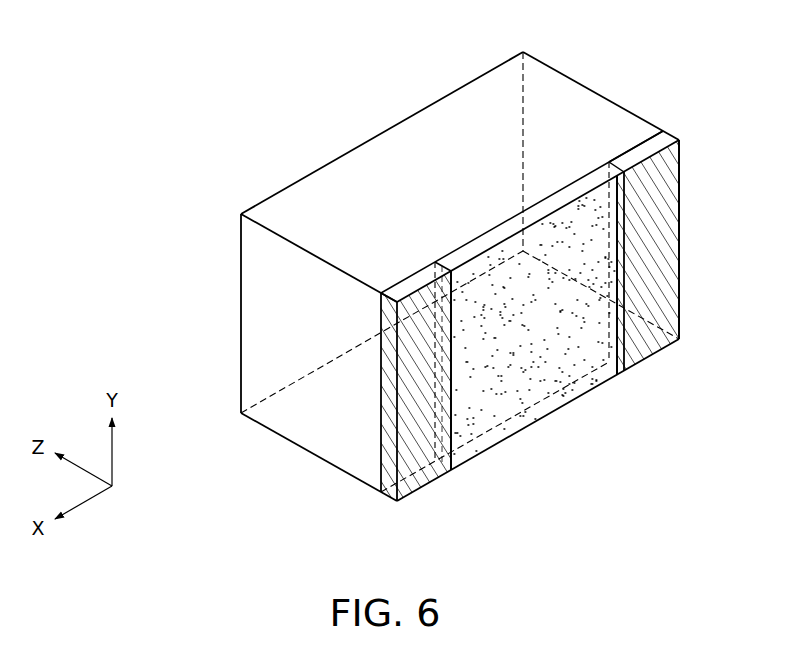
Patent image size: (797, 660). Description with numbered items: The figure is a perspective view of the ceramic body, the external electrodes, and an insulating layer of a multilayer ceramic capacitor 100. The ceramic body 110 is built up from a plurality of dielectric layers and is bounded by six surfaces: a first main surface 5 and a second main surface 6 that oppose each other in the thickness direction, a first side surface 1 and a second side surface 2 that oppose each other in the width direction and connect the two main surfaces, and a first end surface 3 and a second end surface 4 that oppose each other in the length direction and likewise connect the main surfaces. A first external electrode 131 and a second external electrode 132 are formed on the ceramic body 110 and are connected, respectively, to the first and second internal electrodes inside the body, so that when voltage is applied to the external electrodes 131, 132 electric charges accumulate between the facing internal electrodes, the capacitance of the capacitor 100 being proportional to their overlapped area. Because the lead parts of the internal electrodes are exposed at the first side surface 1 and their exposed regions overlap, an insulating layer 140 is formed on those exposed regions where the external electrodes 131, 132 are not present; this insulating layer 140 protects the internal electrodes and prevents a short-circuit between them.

The multilayer ceramic capacitor 100 is at (184, 53).
The ceramic body 110 is at (280, 208).
The first side surface 1 is at (473, 388).
The second side surface 2 is at (366, 187).
The first end surface 3 is at (258, 363).
The second end surface 4 is at (586, 118).
The first main surface 5 is at (440, 143).
The second main surface 6 is at (333, 424).
The first external electrode 131 is at (413, 487).
The second external electrode 132 is at (653, 347).
The insulating layer 140 is at (538, 362).